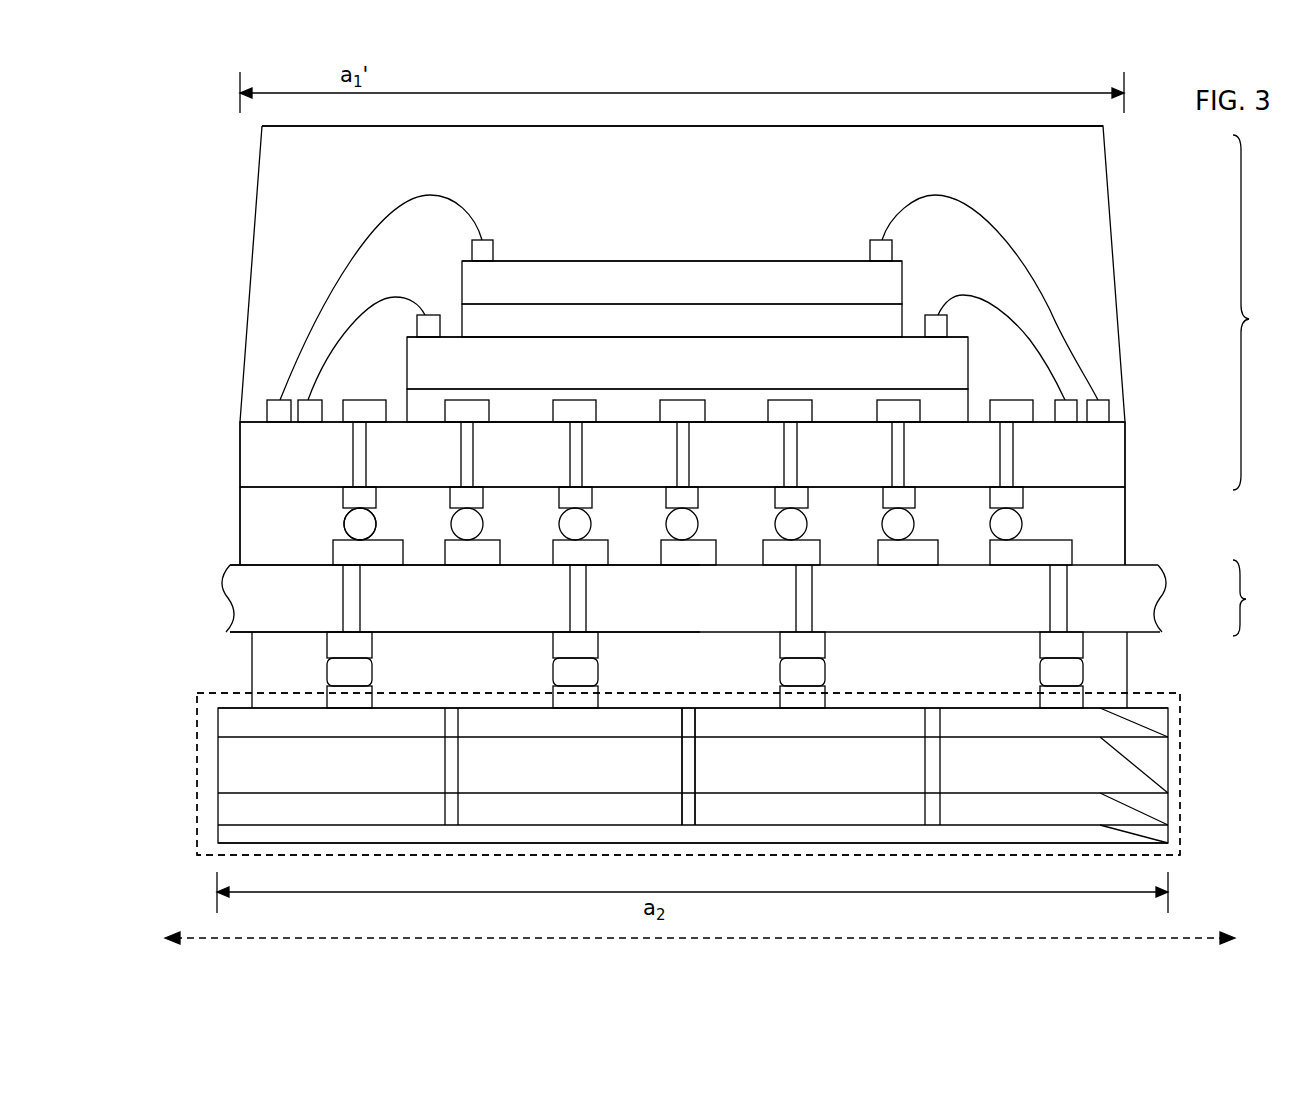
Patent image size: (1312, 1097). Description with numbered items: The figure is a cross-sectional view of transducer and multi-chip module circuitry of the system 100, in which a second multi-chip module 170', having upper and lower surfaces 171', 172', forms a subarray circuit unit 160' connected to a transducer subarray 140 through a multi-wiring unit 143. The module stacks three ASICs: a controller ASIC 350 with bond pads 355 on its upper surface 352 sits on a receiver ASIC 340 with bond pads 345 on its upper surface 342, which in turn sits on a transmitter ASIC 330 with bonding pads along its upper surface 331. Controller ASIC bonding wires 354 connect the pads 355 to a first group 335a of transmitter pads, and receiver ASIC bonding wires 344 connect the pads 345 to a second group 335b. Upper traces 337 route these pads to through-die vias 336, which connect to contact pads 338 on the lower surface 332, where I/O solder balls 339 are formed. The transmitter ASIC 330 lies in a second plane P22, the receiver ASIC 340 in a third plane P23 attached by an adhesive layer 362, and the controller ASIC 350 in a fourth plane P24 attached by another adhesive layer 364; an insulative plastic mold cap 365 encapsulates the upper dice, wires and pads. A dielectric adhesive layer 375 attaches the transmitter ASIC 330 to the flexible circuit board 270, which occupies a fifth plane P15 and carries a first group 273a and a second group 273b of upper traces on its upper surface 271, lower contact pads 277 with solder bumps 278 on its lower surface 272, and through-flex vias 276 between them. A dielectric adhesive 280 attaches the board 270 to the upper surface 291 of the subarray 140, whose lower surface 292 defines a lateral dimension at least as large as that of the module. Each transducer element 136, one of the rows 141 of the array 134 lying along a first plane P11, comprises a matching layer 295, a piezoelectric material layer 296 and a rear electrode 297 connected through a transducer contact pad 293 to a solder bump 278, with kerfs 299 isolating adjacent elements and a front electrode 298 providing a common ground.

The semiconductor package system 100 is at (172, 88).
The second multi-chip module 170' is at (635, 345).
The upper surface of multi-chip module 171' is at (951, 88).
The lower surface of multi-chip module 172' is at (758, 526).
The subarray circuit unit 160' is at (1265, 312).
The insulative plastic mold cap 365 is at (1092, 166).
The controller ASIC 350 is at (684, 295).
The adhesive layer 364 is at (621, 333).
The upper surface of controller ASIC 352 is at (573, 261).
The controller ASIC bond pads 355 is at (925, 325).
The receiver ASIC bond pads 345 is at (868, 247).
The controller ASIC bonding wires 354 is at (925, 195).
The receiver ASIC bonding wires 344 is at (1002, 303).
The receiver ASIC 340 is at (684, 370).
The upper surface of receiver ASIC 342 is at (522, 337).
The adhesive layer 362 is at (641, 418).
The transmitter ASIC 330 is at (414, 465).
The upper surface of transmitter ASIC 331 is at (1113, 418).
The lower surface of transmitter ASIC 332 is at (1113, 487).
The first group of transmitter ASIC bonding pads 335a is at (275, 408).
The second group of transmitter ASIC bonding pads 335b is at (308, 407).
The through-die vias 336 is at (1013, 463).
The upper traces 337 is at (922, 412).
The contact pads 338 is at (1006, 493).
The I/O solder balls 339 is at (360, 525).
The dielectric adhesive layer 375 is at (431, 530).
The first group of upper FCB traces 273a is at (635, 553).
The second group of upper FCB traces 273b is at (632, 553).
The flexible circuit board 270 is at (414, 616).
The upper surface of FCB 271 is at (273, 563).
The lower surface of FCB 272 is at (272, 633).
The through-flex vias 276 is at (1067, 613).
The multi-wiring unit 143 is at (1261, 598).
The dielectric adhesive 280 is at (991, 661).
The lower FCB contact pads 277 is at (1072, 648).
The solder bump 278 is at (1072, 675).
The transducer contact pad 293 is at (348, 698).
The rows 141 is at (214, 811).
The transducer subarray 140 is at (197, 823).
The transducer elements 136 is at (323, 773).
The upper surface of subarray 291 is at (1148, 707).
The lower surface of subarray 292 is at (1160, 845).
The rear electrode 297 is at (1147, 717).
The piezoelectric material layer 296 is at (1147, 771).
The matching layer 295 is at (1147, 805).
The front electrode 298 is at (1147, 836).
The kerfs 299 is at (690, 812).
The two-dimensional linear transducer array 134 is at (845, 938).
The fourth plane P24 is at (218, 277).
The third plane P23 is at (217, 362).
The second plane P22 is at (217, 470).
The fifth plane P15 is at (200, 607).
The first plane P11 is at (197, 758).